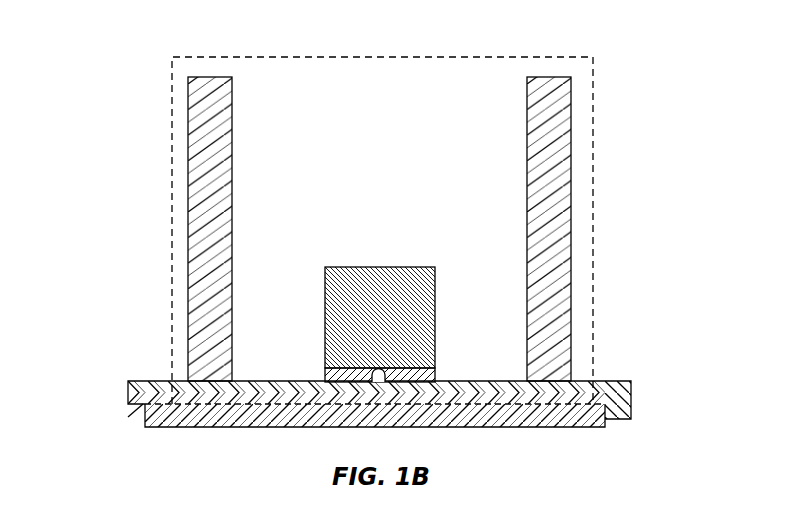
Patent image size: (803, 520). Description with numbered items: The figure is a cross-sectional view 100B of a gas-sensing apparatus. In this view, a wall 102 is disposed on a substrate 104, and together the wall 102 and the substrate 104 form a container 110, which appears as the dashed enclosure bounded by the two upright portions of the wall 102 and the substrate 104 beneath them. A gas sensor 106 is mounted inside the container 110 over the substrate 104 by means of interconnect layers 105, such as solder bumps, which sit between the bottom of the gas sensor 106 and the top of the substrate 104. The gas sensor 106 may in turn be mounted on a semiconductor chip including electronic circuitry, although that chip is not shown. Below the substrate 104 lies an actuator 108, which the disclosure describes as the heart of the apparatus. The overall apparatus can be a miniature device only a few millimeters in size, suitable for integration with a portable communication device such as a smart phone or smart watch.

The cross-sectional view 100B is at (146, 28).
The wall 102 is at (232, 78).
The substrate 104 is at (632, 400).
The interconnect layers 105 is at (437, 376).
The gas sensor 106 is at (325, 320).
The actuator 108 is at (145, 425).
The container 110 is at (594, 233).